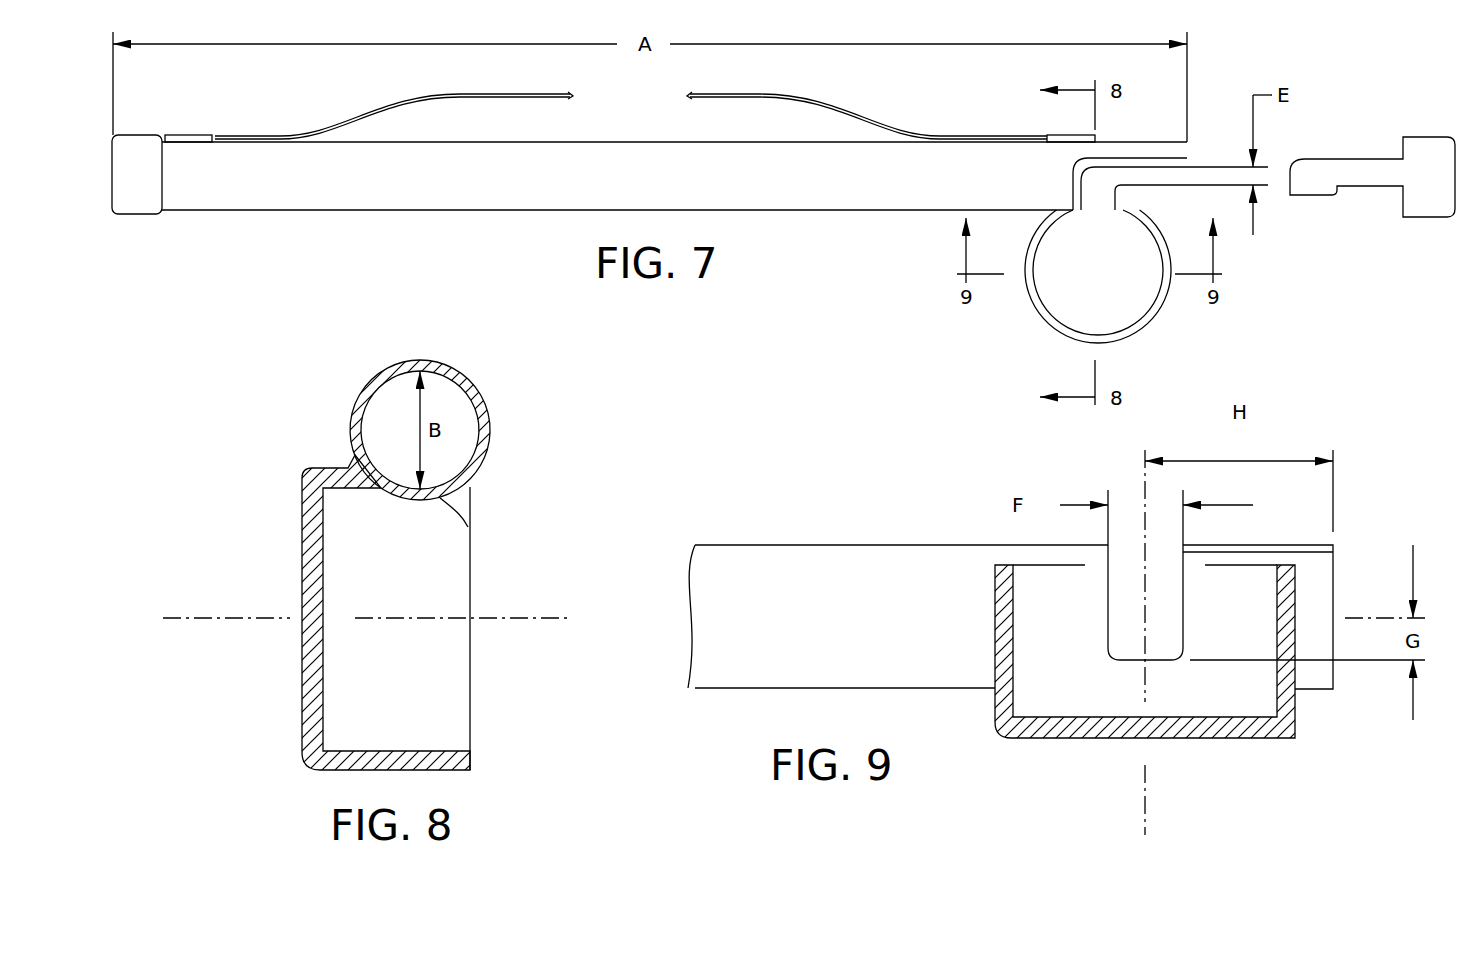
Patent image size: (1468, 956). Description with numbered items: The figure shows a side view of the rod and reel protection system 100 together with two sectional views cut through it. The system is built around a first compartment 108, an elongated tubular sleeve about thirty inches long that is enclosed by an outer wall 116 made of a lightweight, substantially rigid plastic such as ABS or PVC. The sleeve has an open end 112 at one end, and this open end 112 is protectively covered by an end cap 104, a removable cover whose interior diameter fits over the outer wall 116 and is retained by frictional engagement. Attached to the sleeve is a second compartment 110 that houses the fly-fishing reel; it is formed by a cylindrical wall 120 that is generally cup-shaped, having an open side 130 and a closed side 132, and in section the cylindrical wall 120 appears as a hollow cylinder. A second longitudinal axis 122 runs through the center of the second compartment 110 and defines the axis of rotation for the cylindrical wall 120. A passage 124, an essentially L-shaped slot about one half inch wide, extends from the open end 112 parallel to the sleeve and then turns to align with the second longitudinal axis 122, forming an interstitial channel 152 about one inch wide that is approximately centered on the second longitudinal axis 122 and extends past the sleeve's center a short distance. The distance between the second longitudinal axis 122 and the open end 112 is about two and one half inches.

In FIG. 7, the rod and reel protection system 100 is at (860, 262).
In FIG. 7, the end cap 104 is at (1425, 137).
In FIG. 7, the first compartment 108 is at (645, 120).
In FIG. 8, the first compartment 108 is at (385, 345).
In FIG. 9, the first compartment 108 is at (812, 538).
In FIG. 7, the second compartment 110 is at (1032, 320).
In FIG. 8, the second compartment 110 is at (367, 612).
In FIG. 9, the second compartment 110 is at (985, 652).
In FIG. 7, the open end 112 is at (1195, 150).
In FIG. 9, the open end 112 is at (1335, 558).
In FIG. 7, the outer wall 116 is at (523, 205).
In FIG. 8, the outer wall 116 is at (360, 400).
In FIG. 9, the outer wall 116 is at (826, 672).
In FIG. 8, the cylindrical wall 120 is at (302, 745).
In FIG. 9, the cylindrical wall 120 is at (990, 730).
In FIG. 8, the second longitudinal axis 122 is at (527, 618).
In FIG. 9, the second longitudinal axis 122 is at (1140, 487).
In FIG. 8, the passage 124 is at (490, 432).
In FIG. 8, the open side 130 is at (475, 658).
In FIG. 8, the closed side 132 is at (302, 685).
In FIG. 8, the interstitial channel 152 is at (469, 527).